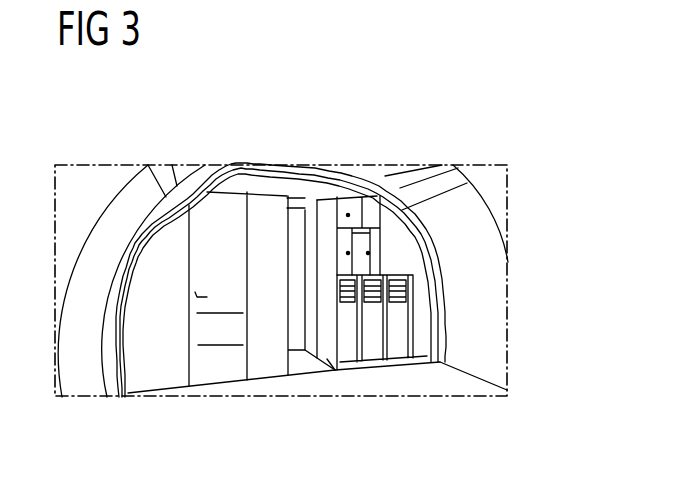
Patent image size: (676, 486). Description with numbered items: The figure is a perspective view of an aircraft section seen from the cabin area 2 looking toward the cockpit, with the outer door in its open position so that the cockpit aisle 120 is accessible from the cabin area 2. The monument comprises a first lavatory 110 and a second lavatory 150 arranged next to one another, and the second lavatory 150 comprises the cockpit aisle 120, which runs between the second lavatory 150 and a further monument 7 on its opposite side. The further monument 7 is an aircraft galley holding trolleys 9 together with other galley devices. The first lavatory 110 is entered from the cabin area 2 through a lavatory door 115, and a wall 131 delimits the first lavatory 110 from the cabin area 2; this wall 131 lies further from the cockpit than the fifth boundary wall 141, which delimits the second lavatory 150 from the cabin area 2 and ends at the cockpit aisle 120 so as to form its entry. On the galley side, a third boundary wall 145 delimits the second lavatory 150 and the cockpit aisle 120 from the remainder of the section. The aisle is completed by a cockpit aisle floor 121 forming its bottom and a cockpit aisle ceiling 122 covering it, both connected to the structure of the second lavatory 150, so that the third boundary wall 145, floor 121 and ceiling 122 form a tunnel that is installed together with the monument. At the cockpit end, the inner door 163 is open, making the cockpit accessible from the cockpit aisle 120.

The first lavatory 110 is at (183, 152).
The second lavatory 150 is at (252, 160).
The cockpit aisle ceiling 122 is at (296, 206).
The inner door 163 is at (312, 213).
The further monument 7 is at (387, 182).
The trolley 9 is at (397, 312).
The cabin area 2 is at (482, 391).
The wall 131 is at (148, 380).
The lavatory door 115 is at (205, 378).
The fifth boundary wall 141 is at (268, 371).
The cockpit aisle 120 is at (284, 404).
The cockpit aisle floor 121 is at (320, 363).
The third boundary wall 145 is at (335, 370).